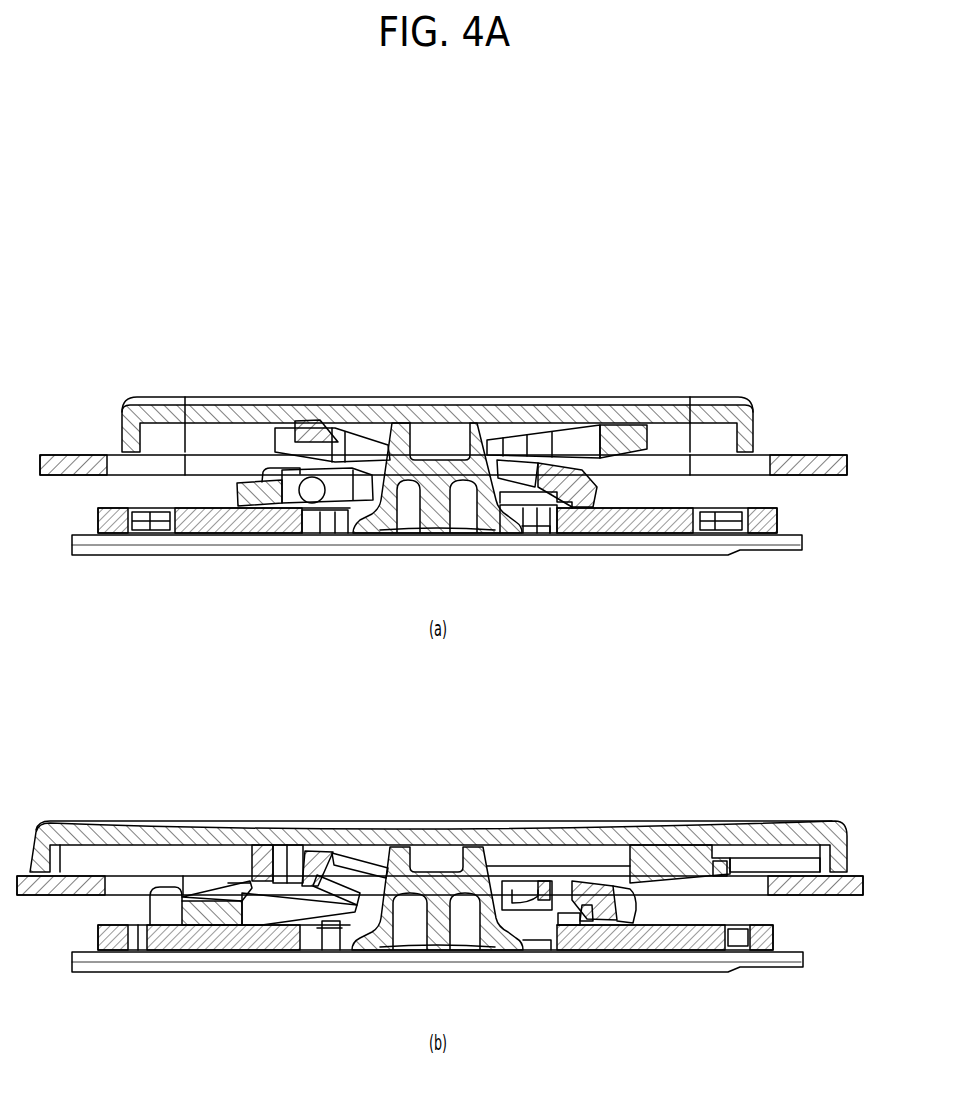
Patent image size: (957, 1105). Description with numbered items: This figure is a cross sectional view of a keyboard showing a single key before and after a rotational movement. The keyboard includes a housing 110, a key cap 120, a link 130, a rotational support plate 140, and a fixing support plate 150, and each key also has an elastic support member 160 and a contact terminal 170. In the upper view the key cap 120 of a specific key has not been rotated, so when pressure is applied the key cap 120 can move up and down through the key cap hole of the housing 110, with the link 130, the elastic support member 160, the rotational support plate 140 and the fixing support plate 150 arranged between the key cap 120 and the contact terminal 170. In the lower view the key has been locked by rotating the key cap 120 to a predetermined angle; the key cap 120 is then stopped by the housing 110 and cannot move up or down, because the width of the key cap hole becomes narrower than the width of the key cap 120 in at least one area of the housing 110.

The housing 110 is at (812, 454).
The key cap 120 is at (713, 422).
The link 130 is at (312, 424).
The rotational support plate 140 is at (643, 525).
The fixing support plate 150 is at (772, 510).
The elastic support member 160 is at (472, 424).
The contact terminal 170 is at (800, 541).